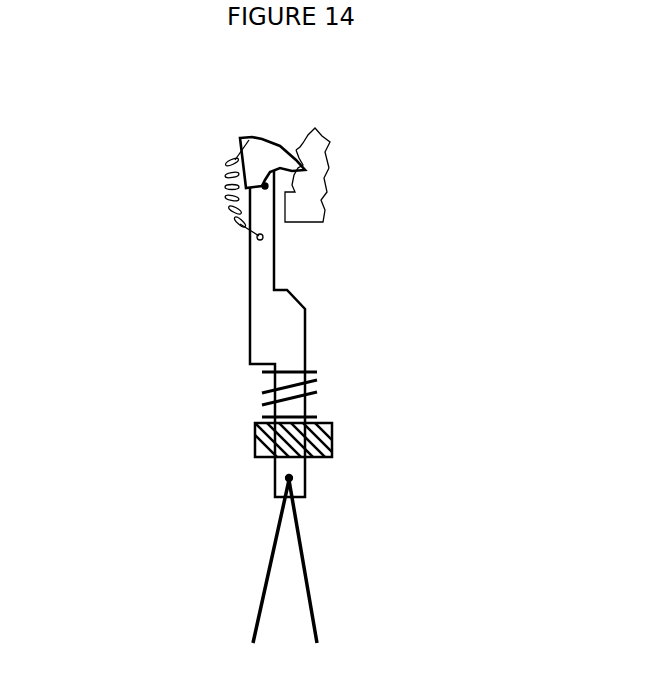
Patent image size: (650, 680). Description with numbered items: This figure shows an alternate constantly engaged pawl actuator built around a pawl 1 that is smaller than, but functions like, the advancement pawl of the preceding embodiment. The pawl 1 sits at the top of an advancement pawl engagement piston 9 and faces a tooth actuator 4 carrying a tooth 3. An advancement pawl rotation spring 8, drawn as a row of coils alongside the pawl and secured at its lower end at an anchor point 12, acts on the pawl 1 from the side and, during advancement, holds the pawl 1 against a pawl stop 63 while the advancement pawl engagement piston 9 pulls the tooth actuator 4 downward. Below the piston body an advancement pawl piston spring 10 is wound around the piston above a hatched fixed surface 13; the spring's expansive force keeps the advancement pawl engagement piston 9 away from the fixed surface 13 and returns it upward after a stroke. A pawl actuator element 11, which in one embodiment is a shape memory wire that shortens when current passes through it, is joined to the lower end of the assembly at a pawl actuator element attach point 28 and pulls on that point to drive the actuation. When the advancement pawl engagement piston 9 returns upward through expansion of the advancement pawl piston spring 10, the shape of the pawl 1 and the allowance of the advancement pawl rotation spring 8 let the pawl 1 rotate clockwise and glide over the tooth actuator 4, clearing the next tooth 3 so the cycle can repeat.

The pawl 1 is at (250, 112).
The tooth 3 is at (301, 140).
The tooth actuator 4 is at (331, 196).
The advancement pawl rotation spring 8 is at (212, 182).
The pawl stop 63 is at (264, 192).
The anchor point 12 is at (258, 246).
The advancement pawl engagement piston 9 is at (287, 325).
The advancement pawl piston spring 10 is at (258, 396).
The fixed surface 13 is at (338, 437).
The pawl actuator element attach point 28 is at (298, 483).
The pawl actuator element 11 is at (278, 565).